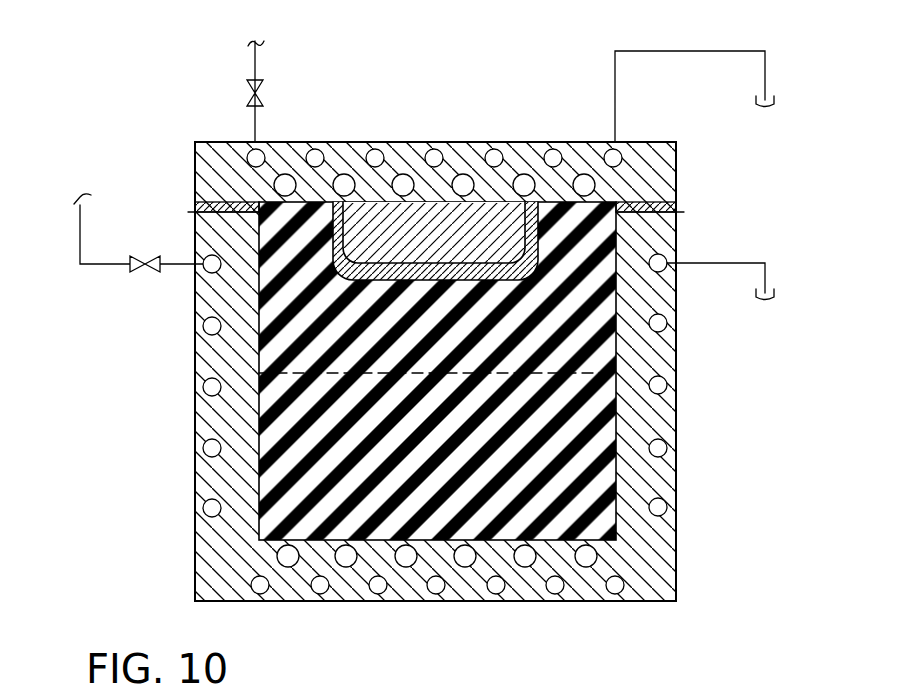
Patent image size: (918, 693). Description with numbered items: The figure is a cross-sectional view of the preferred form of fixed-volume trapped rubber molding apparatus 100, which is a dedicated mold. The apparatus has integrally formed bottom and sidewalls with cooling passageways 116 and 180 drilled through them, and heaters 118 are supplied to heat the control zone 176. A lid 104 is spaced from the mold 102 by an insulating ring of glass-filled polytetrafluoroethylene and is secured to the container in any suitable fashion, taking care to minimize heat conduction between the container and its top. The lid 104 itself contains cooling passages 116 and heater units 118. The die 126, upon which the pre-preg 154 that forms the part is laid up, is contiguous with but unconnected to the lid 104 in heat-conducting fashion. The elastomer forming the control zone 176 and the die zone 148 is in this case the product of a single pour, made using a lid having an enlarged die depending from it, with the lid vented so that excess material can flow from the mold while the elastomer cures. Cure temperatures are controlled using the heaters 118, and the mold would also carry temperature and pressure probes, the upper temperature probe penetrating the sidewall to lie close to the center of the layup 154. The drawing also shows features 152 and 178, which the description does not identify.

The fixed-volume trapped rubber molding apparatus 100 is at (678, 394).
The mold 102 is at (676, 521).
The lid 104 is at (642, 124).
The cooling passageways 116 is at (305, 134).
The heaters 118 is at (339, 134).
The die 126 is at (433, 238).
The die zone 148 is at (518, 350).
The liner 152 is at (513, 264).
The pre-preg 154 is at (427, 273).
The control zone 176 is at (490, 458).
The vent passage 178 is at (186, 201).
The cooling passageways 180 is at (659, 317).